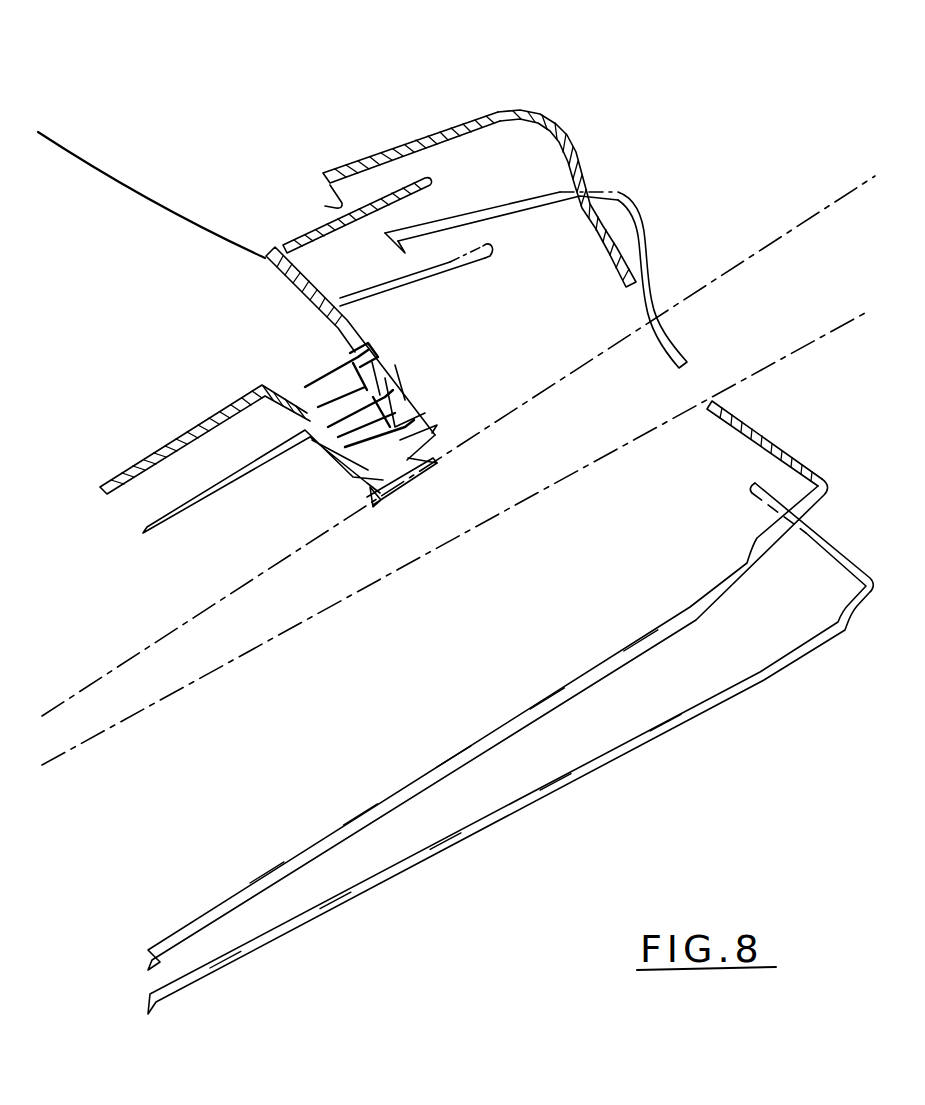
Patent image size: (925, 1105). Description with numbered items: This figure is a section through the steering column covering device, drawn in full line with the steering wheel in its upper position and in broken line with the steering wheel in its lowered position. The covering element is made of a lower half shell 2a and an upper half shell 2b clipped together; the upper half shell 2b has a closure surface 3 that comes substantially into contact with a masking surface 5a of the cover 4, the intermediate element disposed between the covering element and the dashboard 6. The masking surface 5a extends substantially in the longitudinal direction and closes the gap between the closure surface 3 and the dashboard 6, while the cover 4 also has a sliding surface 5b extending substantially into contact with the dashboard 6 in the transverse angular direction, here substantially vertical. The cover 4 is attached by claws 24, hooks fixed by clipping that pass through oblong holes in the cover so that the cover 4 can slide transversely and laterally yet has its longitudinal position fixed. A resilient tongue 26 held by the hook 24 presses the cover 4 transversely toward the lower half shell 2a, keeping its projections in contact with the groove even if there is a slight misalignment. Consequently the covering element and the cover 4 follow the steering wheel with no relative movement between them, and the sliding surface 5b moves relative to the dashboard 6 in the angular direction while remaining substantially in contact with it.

The lower half shell 2a is at (773, 447).
The upper half shell 2b is at (520, 109).
The closure surface 3 is at (337, 207).
The cover 4 is at (252, 228).
The masking surface 5a is at (290, 243).
The sliding surface 5b is at (322, 278).
The dashboard 6 is at (93, 163).
The claws 24 is at (307, 408).
The resilient tongue 26 is at (328, 378).